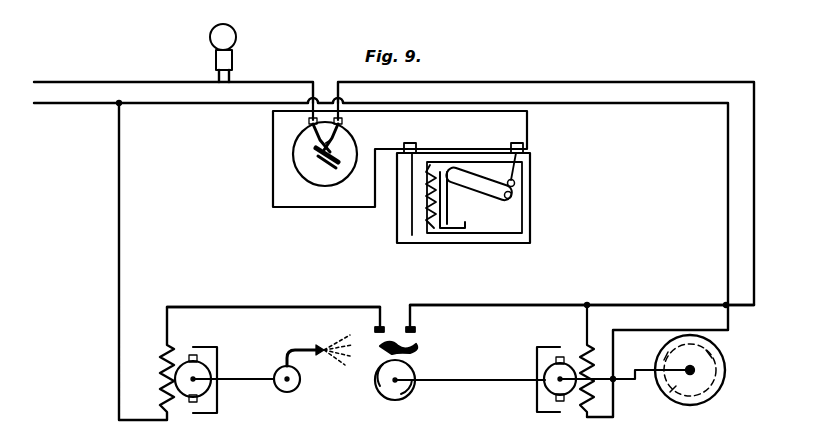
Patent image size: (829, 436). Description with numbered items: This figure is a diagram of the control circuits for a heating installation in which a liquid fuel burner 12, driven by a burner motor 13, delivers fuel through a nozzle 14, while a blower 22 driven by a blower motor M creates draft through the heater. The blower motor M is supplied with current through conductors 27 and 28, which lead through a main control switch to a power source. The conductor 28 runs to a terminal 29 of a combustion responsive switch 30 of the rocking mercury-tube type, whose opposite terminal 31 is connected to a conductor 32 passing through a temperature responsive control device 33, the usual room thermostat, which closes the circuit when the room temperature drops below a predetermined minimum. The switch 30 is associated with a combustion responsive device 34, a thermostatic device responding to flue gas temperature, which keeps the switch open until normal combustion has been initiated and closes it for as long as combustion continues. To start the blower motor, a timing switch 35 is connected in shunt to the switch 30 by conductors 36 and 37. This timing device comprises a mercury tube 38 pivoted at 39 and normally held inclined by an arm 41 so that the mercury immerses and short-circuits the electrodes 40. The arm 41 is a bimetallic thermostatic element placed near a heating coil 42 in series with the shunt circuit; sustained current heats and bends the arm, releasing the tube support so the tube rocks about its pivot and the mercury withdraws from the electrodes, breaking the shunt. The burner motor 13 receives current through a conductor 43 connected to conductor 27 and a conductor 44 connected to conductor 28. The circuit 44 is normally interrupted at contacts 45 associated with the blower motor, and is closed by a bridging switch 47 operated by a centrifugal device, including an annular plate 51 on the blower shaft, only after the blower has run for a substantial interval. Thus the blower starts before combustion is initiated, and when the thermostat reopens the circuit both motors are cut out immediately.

The liquid fuel burner 12 is at (302, 380).
The burner motor 13 is at (198, 372).
The nozzle 14 is at (305, 345).
The blower 22 is at (728, 368).
The conductor 27 is at (77, 103).
The conductor 28 is at (511, 82).
The terminal 29 is at (345, 121).
The combustion responsive switch 30 is at (340, 154).
The terminal 31 is at (308, 121).
The conductor 32 is at (270, 76).
The temperature responsive control device 33 is at (237, 43).
The combustion responsive device 34 is at (338, 180).
The timing switch 35 is at (532, 216).
The conductor 36 is at (462, 111).
The conductor 37 is at (315, 207).
The mercury tube 38 is at (478, 172).
The pivot 39 is at (508, 199).
The switch contacts or electrodes 40 is at (516, 183).
The arm 41 is at (451, 209).
The heating coil 42 is at (430, 200).
The conductor 43 is at (124, 212).
The conductor 44 is at (252, 307).
The contacts 45 is at (376, 330).
The bridging switch 47 is at (421, 349).
The annular plate 51 is at (382, 394).
The blower motor M is at (552, 370).